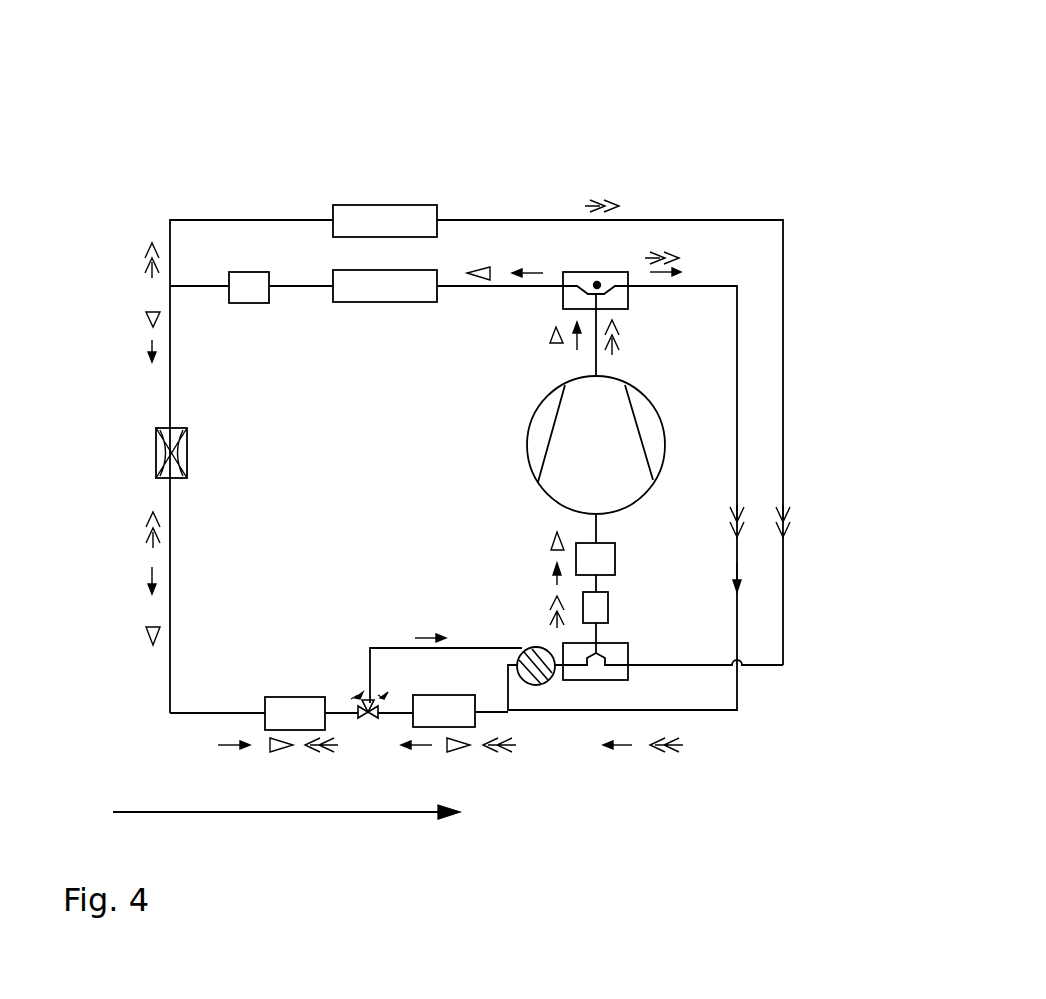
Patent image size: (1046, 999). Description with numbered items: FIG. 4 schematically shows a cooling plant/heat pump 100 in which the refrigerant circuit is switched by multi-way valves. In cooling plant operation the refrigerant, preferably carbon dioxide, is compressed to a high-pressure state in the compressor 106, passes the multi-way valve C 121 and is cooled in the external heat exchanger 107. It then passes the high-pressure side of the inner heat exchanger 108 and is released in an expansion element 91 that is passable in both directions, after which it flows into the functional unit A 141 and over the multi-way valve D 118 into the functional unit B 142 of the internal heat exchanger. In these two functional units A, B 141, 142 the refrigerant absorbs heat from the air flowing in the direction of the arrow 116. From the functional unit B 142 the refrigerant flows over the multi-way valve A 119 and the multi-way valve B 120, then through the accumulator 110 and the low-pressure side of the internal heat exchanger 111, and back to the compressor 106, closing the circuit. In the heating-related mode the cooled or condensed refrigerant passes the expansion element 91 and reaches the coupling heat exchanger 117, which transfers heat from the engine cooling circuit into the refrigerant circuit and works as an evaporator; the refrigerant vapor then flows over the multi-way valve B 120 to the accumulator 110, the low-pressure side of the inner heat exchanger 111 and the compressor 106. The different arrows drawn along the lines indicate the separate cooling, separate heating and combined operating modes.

The air conditioning system 100 is at (784, 167).
The expansion valve 91 is at (167, 452).
The compressor 106 is at (583, 445).
The external heat exchanger 107 is at (402, 287).
The inner heat exchanger 108 is at (245, 287).
The accumulator 110 is at (597, 608).
The low-pressure side of the internal heat exchanger 111 is at (597, 557).
The air flow 116 is at (183, 812).
The coupling heat exchanger 117 is at (382, 221).
The multi-way valve D 118 is at (368, 703).
The multi-way valve A 119 is at (532, 673).
The multi-way valve B 120 is at (602, 665).
The multi-way valve C 121 is at (570, 307).
The functional unit A 141 is at (285, 714).
The functional unit B 142 is at (428, 712).